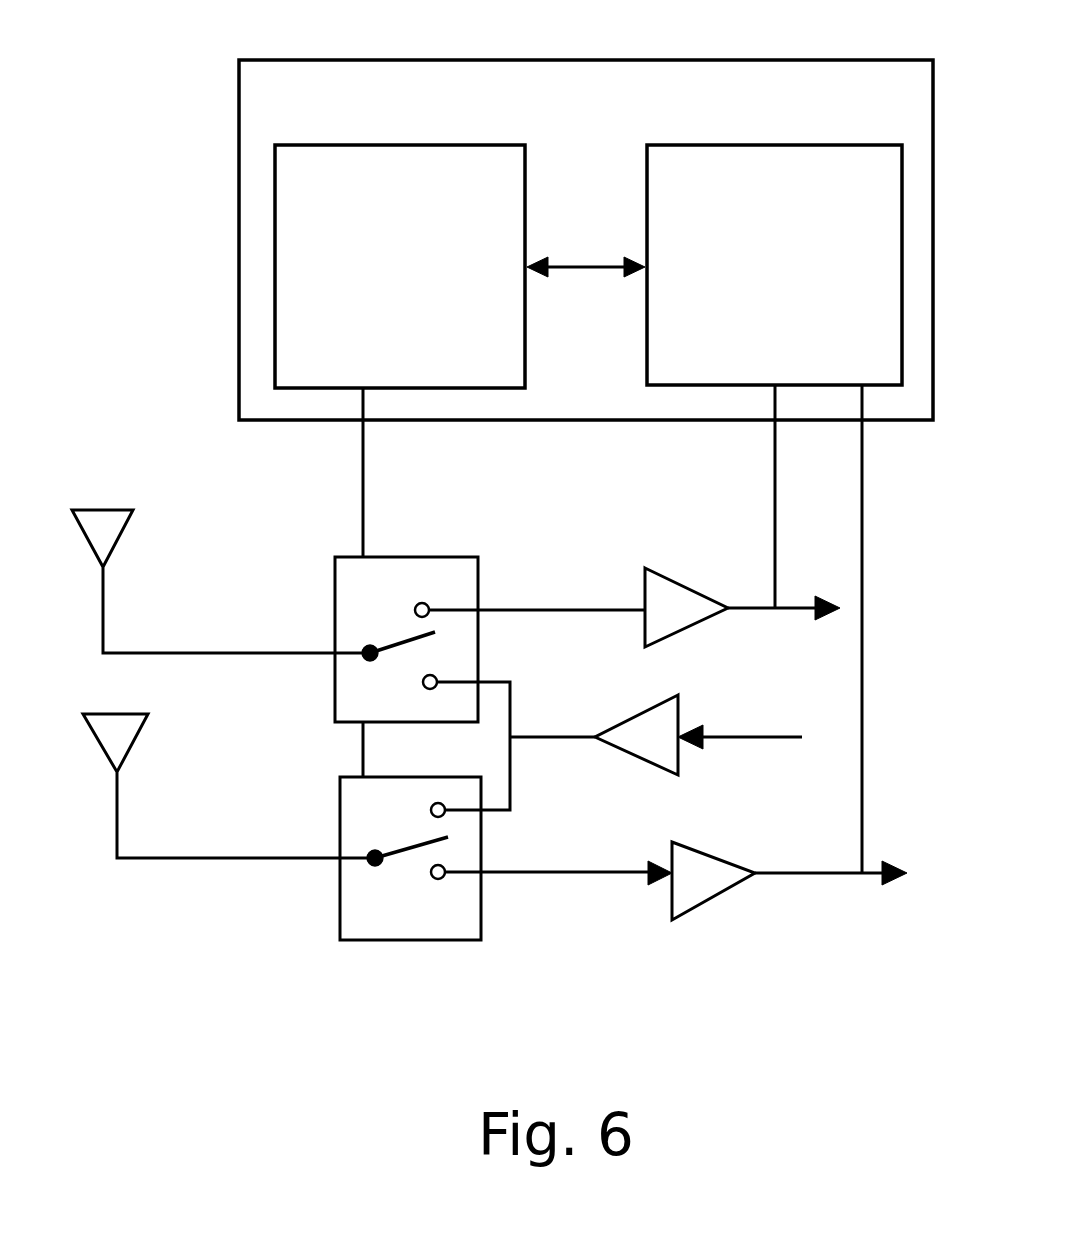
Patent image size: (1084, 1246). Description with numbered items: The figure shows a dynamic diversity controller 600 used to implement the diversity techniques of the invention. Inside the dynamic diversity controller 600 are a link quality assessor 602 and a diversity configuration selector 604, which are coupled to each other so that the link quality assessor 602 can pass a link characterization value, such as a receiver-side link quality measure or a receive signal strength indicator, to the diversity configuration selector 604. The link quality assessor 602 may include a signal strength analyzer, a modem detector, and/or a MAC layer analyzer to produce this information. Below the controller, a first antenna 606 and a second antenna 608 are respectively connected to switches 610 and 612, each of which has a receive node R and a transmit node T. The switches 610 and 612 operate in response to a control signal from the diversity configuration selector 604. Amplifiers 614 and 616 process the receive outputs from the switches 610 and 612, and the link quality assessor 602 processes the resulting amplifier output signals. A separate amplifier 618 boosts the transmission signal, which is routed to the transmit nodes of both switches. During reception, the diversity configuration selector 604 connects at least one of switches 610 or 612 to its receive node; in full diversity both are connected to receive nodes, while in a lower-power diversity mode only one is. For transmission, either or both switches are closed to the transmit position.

The dynamic diversity controller 600 is at (285, 62).
The link quality assessor 602 is at (683, 147).
The diversity configuration selector 604 is at (333, 147).
The first antenna 606 is at (135, 653).
The second antenna 608 is at (135, 858).
The switch 610 is at (478, 577).
The switch 612 is at (534, 926).
The amplifier 614 is at (713, 557).
The amplifier 616 is at (758, 840).
The amplifier 618 is at (680, 706).